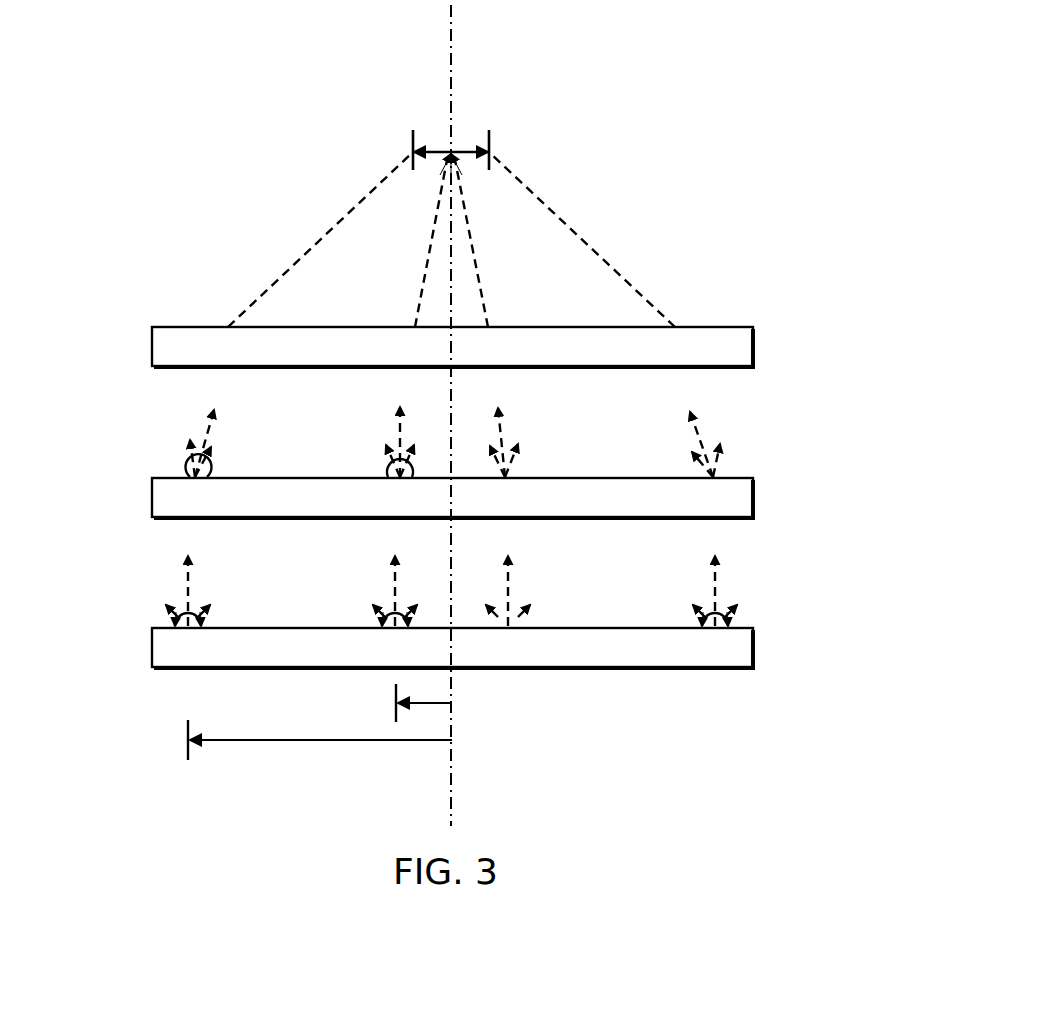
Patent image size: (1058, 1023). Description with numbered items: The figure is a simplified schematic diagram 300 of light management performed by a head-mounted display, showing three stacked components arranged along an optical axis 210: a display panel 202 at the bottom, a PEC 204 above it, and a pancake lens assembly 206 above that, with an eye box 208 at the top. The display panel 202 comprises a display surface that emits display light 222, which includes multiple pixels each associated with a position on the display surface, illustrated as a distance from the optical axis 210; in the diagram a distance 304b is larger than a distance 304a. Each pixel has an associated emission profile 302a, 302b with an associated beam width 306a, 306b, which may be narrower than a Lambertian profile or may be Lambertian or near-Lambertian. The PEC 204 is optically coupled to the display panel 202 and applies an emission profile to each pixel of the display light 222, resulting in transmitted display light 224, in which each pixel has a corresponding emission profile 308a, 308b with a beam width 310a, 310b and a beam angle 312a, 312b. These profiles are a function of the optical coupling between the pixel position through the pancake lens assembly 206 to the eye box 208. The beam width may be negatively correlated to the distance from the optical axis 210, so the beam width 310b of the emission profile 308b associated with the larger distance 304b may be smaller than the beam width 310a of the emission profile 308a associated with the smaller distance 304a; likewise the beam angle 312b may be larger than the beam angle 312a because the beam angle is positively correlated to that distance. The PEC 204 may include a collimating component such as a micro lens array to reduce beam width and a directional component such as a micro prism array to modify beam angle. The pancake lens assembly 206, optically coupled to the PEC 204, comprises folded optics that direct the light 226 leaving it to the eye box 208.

The diagram 300 is at (884, 118).
The optical axis 210 is at (452, 65).
The eye box 208 is at (492, 151).
The pancake lens assembly 206 is at (755, 345).
The PEC 204 is at (755, 495).
The display panel 202 is at (755, 646).
The light rays exiting pancake lens 226 is at (258, 240).
The transmitted display light 224 is at (369, 424).
The display light 222 is at (383, 572).
The emission profile 308a is at (374, 419).
The emission profile 308b is at (183, 421).
The beam width 310a is at (396, 466).
The beam width 310b is at (191, 462).
The beam angle 312a is at (415, 466).
The beam angle 312b is at (212, 463).
The emission profile 302a is at (376, 578).
The emission profile 302b is at (218, 576).
The beam width 306a is at (398, 606).
The beam width 306b is at (193, 608).
The distance 304a is at (418, 704).
The distance 304b is at (214, 742).